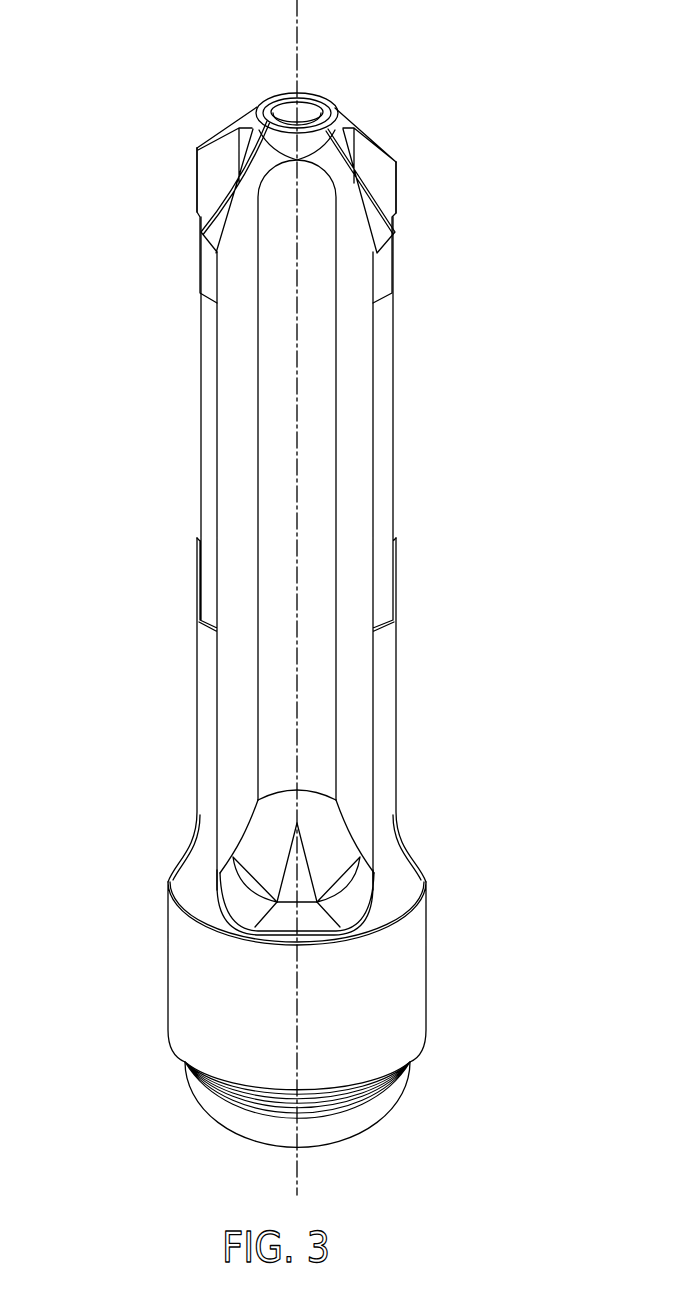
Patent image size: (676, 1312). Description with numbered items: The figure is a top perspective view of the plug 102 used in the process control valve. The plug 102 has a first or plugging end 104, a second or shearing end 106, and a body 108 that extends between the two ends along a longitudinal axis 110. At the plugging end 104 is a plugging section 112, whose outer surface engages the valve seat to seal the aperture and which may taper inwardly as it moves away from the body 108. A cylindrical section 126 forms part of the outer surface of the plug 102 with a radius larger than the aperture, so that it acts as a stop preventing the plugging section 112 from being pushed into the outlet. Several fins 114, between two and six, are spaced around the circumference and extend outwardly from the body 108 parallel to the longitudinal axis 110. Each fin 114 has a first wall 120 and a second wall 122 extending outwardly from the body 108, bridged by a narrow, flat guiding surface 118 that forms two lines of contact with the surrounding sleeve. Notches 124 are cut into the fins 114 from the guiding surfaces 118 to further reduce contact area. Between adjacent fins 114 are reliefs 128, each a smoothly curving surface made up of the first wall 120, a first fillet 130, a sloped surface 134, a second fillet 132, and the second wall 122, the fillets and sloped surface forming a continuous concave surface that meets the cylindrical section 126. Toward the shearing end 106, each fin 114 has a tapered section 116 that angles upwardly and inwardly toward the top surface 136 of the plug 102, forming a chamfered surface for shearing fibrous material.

The plug 102 is at (158, 123).
The first or plugging end 104 is at (318, 1147).
The second or shearing end 106 is at (281, 95).
The body 108 is at (297, 477).
The longitudinal axis 110 is at (300, 56).
The plugging section 112 is at (233, 1096).
The fins 114 is at (198, 188).
The tapered section 116 is at (236, 123).
The guiding surface 118 is at (388, 274).
The first wall 120 is at (360, 758).
The second wall 122 is at (240, 712).
The notches 124 is at (212, 441).
The cylindrical section 126 is at (205, 1003).
The reliefs 128 is at (277, 642).
The first fillet 130 is at (333, 848).
The second fillet 132 is at (247, 893).
The sloped surface 134 is at (293, 913).
The top surface 136 is at (317, 93).